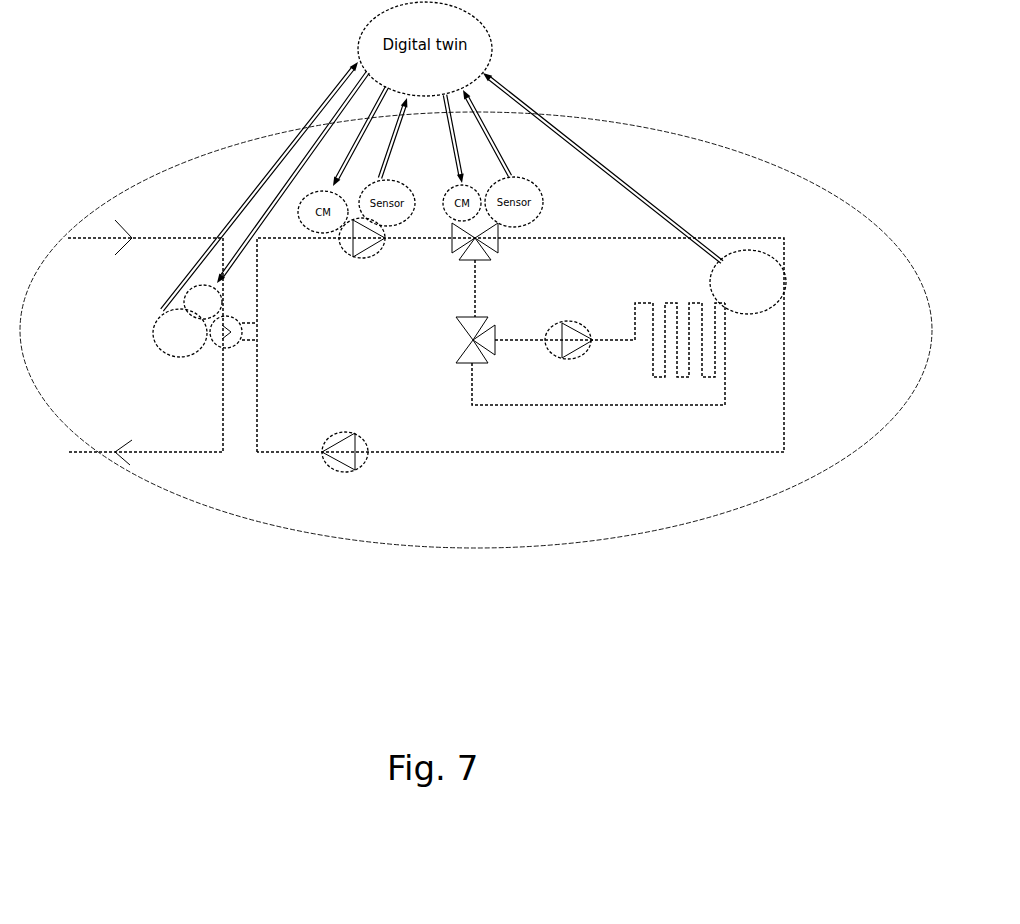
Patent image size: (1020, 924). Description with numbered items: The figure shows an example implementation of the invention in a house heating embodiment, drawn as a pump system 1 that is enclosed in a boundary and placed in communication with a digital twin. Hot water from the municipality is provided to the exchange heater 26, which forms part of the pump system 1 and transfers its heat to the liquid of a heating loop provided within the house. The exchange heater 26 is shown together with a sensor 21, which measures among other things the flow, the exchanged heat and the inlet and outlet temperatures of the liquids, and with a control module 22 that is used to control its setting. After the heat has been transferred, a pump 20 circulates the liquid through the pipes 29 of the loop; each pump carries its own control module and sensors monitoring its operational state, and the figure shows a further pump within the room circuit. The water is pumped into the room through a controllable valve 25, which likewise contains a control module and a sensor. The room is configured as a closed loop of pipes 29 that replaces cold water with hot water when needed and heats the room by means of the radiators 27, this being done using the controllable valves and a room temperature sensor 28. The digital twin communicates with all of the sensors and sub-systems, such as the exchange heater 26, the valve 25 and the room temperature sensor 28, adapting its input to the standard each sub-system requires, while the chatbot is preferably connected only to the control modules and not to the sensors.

The pump system 1 is at (125, 145).
The pump 20 is at (370, 257).
The sensor 21 is at (155, 350).
The control module 22 is at (222, 303).
The valve 25 is at (505, 248).
The exchange heater 26 is at (249, 331).
The radiators 27 is at (733, 358).
The room temperature sensor 28 is at (762, 257).
The pipes 29 is at (150, 237).